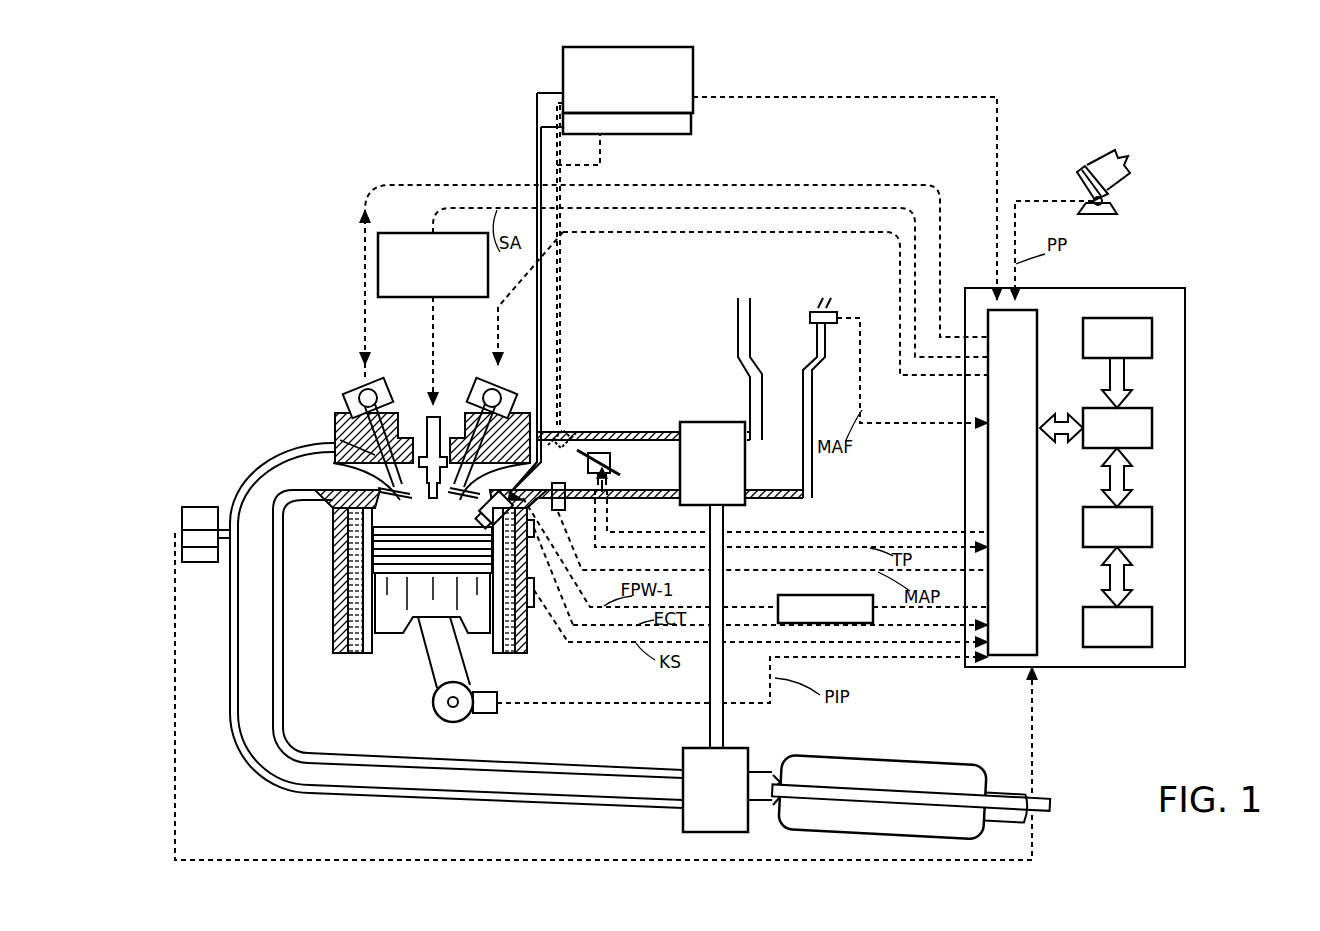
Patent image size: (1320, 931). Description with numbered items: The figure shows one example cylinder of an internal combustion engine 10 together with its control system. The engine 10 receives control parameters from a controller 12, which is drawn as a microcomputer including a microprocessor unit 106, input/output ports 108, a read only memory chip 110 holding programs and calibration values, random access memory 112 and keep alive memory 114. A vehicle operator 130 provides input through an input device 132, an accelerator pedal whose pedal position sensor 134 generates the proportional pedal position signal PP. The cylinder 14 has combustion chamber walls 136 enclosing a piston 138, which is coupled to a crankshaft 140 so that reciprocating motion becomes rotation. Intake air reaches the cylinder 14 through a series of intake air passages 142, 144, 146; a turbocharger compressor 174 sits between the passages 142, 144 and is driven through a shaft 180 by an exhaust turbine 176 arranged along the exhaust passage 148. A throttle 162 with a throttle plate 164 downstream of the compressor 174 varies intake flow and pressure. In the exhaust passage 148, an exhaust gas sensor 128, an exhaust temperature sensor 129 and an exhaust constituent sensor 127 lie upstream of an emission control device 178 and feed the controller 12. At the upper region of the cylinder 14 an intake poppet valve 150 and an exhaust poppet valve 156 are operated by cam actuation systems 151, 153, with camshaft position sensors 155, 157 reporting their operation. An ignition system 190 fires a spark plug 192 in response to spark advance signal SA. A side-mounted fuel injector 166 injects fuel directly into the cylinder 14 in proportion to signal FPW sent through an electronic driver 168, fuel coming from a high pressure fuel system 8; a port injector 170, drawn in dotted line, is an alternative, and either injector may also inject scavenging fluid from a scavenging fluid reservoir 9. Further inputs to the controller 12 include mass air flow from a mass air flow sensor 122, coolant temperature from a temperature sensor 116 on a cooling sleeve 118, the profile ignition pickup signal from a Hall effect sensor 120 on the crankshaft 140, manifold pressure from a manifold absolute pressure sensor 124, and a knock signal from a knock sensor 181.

The high pressure fuel system 8 is at (694, 62).
The scavenging fluid reservoir 9 is at (692, 122).
The internal combustion engine 10 is at (178, 128).
The controller 12 is at (1185, 292).
The cylinder 14 is at (356, 514).
The microprocessor unit 106 is at (1152, 426).
The input/output ports 108 is at (1037, 318).
The read only memory chip 110 is at (1152, 336).
The random access memory 112 is at (1152, 526).
The keep alive memory 114 is at (1152, 626).
The temperature sensor 116 is at (536, 530).
The cooling sleeve 118 is at (512, 609).
The Hall effect sensor 120 is at (490, 718).
The mass air flow sensor 122 is at (838, 312).
The manifold absolute pressure sensor 124 is at (562, 512).
The exhaust constituent sensor 127 is at (184, 512).
The exhaust gas sensor 128 is at (184, 530).
The exhaust temperature sensor 129 is at (184, 550).
The vehicle operator 130 is at (1125, 175).
The input device 132 is at (1080, 180).
The pedal position sensor 134 is at (1106, 203).
The combustion chamber walls 136 is at (380, 642).
The piston 138 is at (415, 605).
The crankshaft 140 is at (448, 720).
The intake air passage 142 is at (768, 344).
The intake air passage 144 is at (638, 475).
The intake air passage 146 is at (542, 475).
The exhaust passage 148 is at (293, 484).
The intake poppet valve 150 is at (441, 470).
The cam actuation system 151 is at (486, 388).
The cam actuation system 153 is at (373, 388).
The camshaft position sensor 155 is at (501, 396).
The exhaust poppet valve 156 is at (365, 456).
The camshaft position sensor 157 is at (360, 396).
The throttle 162 is at (602, 456).
The throttle plate 164 is at (582, 452).
The fuel injector 166 is at (497, 497).
The electronic driver 168 is at (780, 596).
The port injector 170 is at (565, 424).
The compressor 174 is at (710, 422).
The exhaust turbine 176 is at (683, 812).
The emission control device 178 is at (950, 766).
The shaft 180 is at (717, 714).
The knock sensor 181 is at (536, 595).
The ignition system 190 is at (393, 233).
The spark plug 192 is at (430, 447).